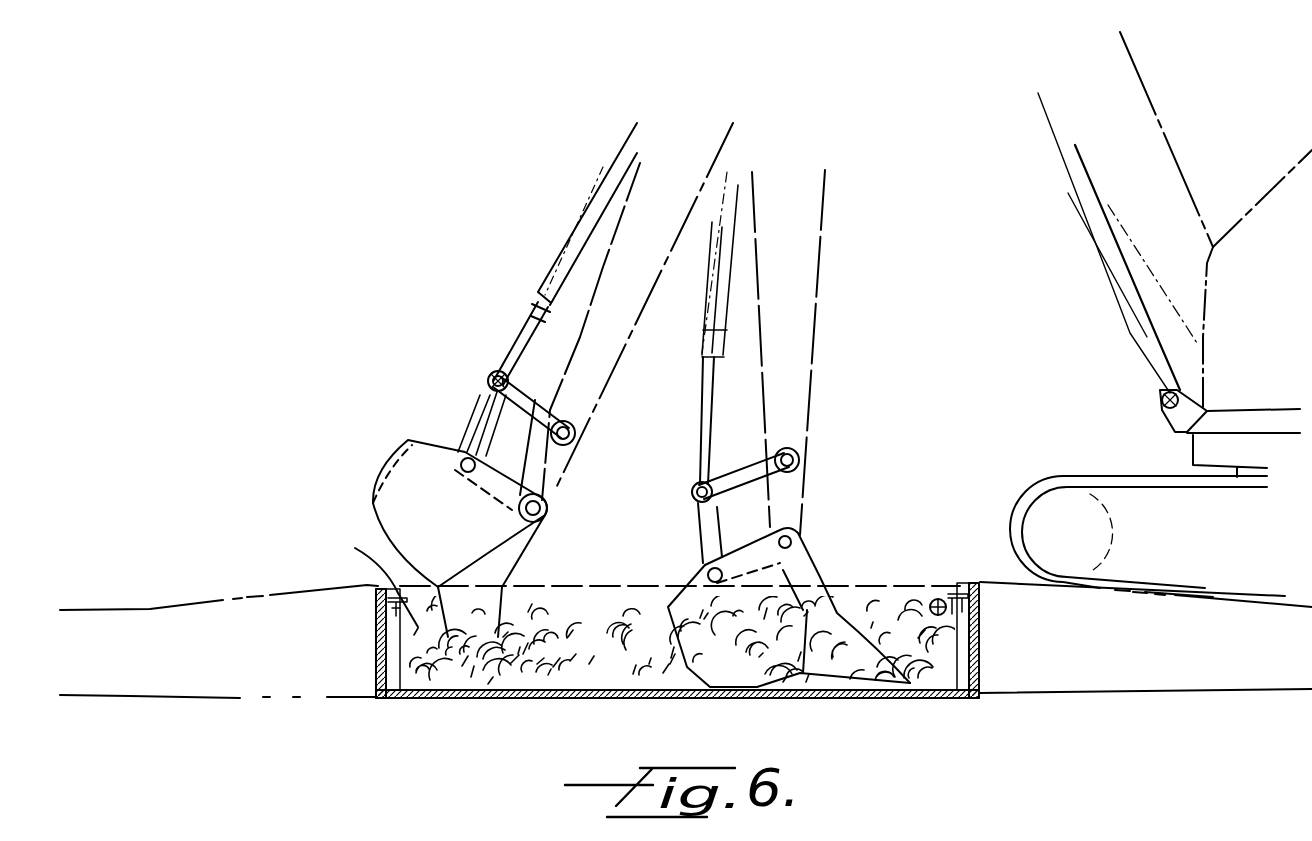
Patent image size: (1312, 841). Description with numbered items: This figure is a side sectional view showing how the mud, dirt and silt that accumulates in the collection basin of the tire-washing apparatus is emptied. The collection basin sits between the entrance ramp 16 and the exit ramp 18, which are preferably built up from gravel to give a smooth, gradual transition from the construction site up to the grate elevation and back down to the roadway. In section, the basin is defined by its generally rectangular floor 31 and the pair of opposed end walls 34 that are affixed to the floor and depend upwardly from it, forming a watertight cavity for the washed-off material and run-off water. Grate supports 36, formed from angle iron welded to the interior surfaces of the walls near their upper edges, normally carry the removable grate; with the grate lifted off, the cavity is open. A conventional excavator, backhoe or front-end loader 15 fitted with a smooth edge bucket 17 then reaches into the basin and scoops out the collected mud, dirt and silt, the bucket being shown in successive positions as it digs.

The excavator, backhoe or front-end loader 15 is at (1207, 363).
The entrance ramp 16 is at (170, 607).
The smooth edge bucket 17 is at (395, 468).
The exit ramp 18 is at (1222, 600).
The floor 31 is at (537, 697).
The end walls 34 is at (375, 657).
The grate supports 36 is at (393, 590).